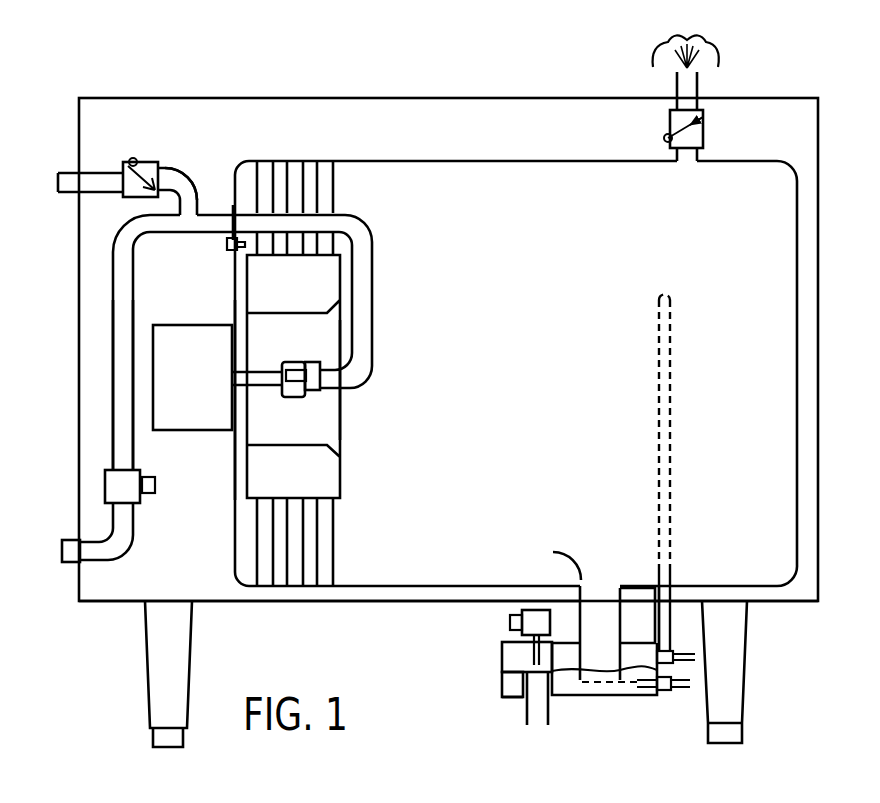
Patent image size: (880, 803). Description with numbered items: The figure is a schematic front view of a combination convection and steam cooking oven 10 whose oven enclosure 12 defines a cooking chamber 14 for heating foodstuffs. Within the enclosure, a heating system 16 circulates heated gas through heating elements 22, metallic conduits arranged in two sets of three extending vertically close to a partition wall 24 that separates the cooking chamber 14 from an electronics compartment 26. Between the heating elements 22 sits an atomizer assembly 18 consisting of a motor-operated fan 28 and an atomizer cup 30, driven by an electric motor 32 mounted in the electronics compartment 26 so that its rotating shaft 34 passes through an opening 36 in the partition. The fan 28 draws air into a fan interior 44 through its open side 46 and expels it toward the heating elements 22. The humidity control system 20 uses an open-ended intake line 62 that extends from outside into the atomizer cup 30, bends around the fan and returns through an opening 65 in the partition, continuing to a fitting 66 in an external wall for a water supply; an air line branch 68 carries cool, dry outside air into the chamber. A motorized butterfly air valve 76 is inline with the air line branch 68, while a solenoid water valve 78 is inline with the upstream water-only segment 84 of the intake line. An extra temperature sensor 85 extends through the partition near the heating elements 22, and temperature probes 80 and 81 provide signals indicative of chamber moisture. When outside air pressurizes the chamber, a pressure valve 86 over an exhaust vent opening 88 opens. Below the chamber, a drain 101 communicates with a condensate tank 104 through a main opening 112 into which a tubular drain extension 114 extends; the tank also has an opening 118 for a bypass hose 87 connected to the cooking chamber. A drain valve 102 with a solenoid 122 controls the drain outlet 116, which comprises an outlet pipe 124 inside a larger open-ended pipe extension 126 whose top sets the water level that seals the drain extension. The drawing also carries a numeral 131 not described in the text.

The combination convection and steam cooking oven 10 is at (365, 88).
The oven enclosure 12 is at (333, 603).
The cooking chamber 14 is at (588, 294).
The heating system 16 is at (352, 559).
The atomizer assembly 18 is at (366, 413).
The humidity control system 20 is at (178, 160).
The heating elements 22 is at (268, 548).
The partition wall 24 is at (233, 545).
The electronics compartment 26 is at (168, 572).
The motor-operated fan 28 is at (342, 468).
The atomizer cup 30 is at (295, 392).
The electric motor 32 is at (210, 412).
The rotating shaft 34 is at (255, 372).
The opening 36 is at (240, 368).
The fan interior 44 is at (306, 362).
The open side 46 is at (357, 396).
The intake line 62 is at (194, 240).
The opening 65 is at (232, 212).
The fitting 66 is at (78, 542).
The air line branch 68 is at (178, 183).
The air valve 76 is at (131, 158).
The water valve 78 is at (140, 477).
The temperature probe 80 is at (680, 652).
The temperature probe 81 is at (668, 690).
The water-only segment 84 is at (113, 455).
The temperature sensor 85 is at (227, 250).
The pressure valve 86 is at (703, 128).
The bypass hose 87 is at (672, 445).
The exhaust vent opening 88 is at (688, 90).
The drain 101 is at (562, 582).
The drain valve 102 is at (510, 622).
The condensate tank 104 is at (502, 672).
The main opening 112 is at (567, 640).
The tubular drain extension 114 is at (608, 628).
The drain outlet 116 is at (569, 708).
The opening 118 is at (662, 648).
The solenoid 122 is at (502, 655).
The outlet pipe 124 is at (522, 718).
The pipe extension 126 is at (500, 680).
The component 131 is at (215, 798).